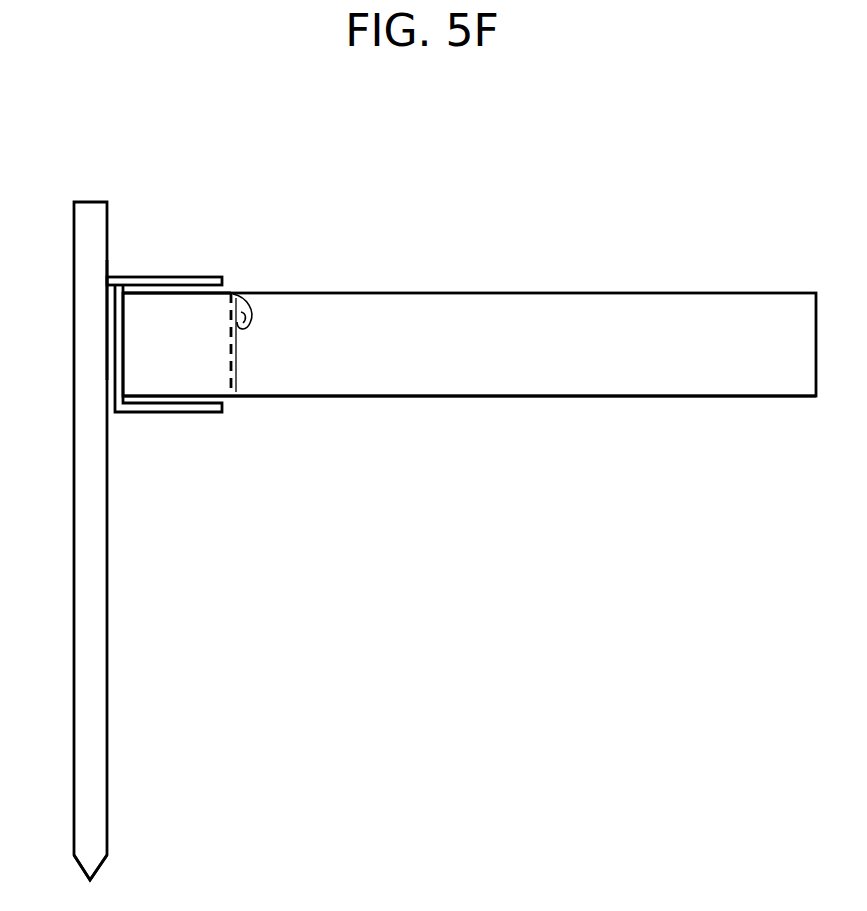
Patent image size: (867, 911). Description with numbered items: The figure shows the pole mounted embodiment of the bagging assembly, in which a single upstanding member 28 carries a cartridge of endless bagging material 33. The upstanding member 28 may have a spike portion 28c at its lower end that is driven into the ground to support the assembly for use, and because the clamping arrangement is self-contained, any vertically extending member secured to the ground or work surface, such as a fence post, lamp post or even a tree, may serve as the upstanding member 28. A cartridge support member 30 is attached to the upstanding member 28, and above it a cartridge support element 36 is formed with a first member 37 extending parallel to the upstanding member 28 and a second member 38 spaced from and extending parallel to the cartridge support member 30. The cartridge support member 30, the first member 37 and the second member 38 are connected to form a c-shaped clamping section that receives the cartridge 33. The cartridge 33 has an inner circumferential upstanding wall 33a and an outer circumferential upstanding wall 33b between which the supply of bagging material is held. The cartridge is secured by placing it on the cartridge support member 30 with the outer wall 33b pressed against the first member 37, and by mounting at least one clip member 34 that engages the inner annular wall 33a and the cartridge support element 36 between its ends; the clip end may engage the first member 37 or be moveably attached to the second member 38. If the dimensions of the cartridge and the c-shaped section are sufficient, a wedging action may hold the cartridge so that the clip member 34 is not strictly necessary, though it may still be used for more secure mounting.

The upstanding member 28 is at (74, 662).
The spike portion 28c is at (100, 867).
The cartridge support member 30 is at (148, 412).
The cartridge of endless bagging material 33 is at (755, 293).
The inner circumferential upstanding wall 33a is at (236, 378).
The outer circumferential upstanding wall 33b is at (642, 392).
The clip member 34 is at (233, 293).
The cartridge support element 36 is at (107, 322).
The first member 37 is at (120, 297).
The second member 38 is at (200, 277).